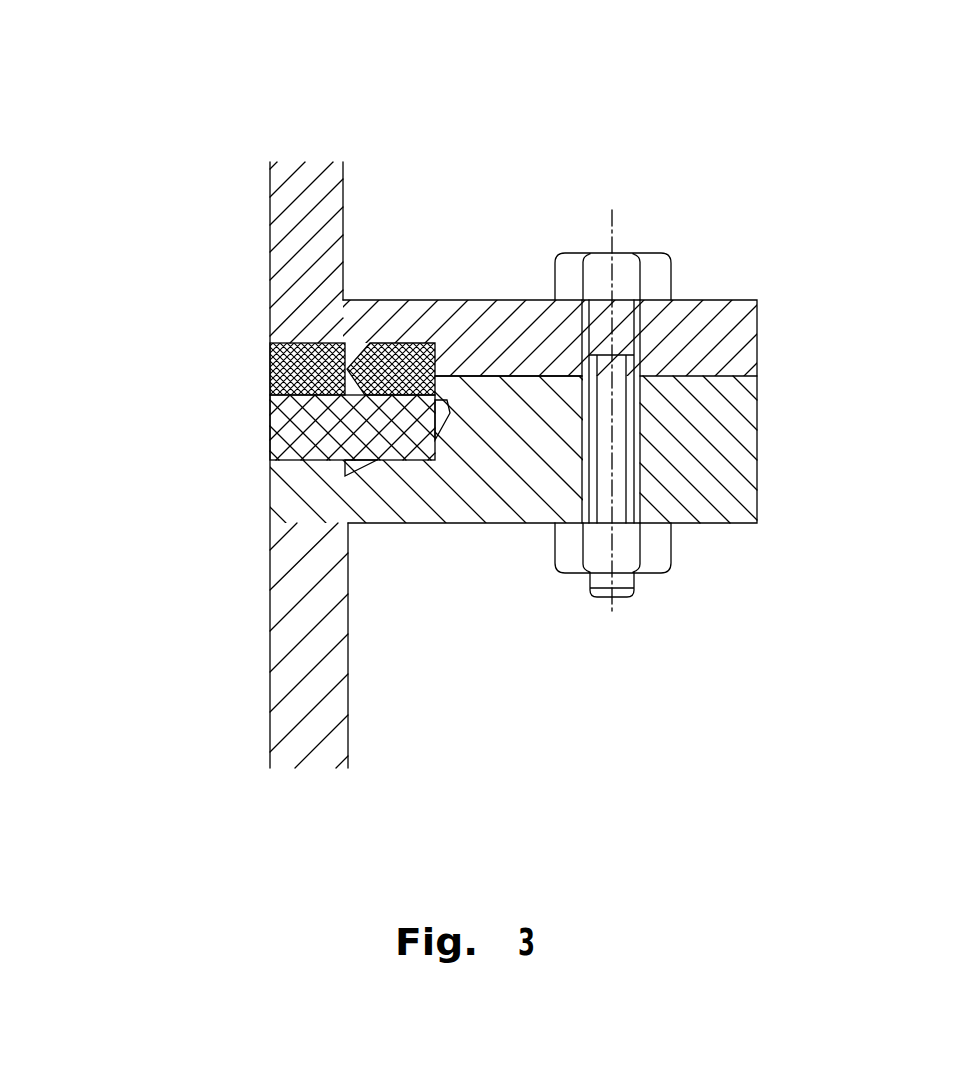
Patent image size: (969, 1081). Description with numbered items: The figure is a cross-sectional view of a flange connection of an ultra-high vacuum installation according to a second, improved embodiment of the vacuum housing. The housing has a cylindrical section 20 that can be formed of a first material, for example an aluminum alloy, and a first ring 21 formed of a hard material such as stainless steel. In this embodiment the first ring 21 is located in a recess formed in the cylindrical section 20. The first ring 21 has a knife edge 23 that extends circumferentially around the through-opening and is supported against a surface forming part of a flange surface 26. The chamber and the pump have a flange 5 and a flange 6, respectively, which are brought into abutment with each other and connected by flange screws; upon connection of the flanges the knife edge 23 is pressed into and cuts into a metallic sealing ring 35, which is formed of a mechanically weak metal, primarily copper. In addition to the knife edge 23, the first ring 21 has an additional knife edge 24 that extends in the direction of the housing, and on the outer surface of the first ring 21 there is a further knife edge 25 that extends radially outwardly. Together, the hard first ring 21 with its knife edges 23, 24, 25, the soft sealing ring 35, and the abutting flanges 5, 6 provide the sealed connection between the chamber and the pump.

The flange 5 is at (725, 340).
The flange 6 is at (725, 465).
The cylindrical section 20 is at (308, 687).
The first ring 21 is at (396, 438).
The knife edge 23 is at (325, 340).
The additional knife edge 24 is at (348, 463).
The further knife edge 25 is at (447, 408).
The flange surface 26 is at (523, 371).
The sealing ring 35 is at (270, 459).